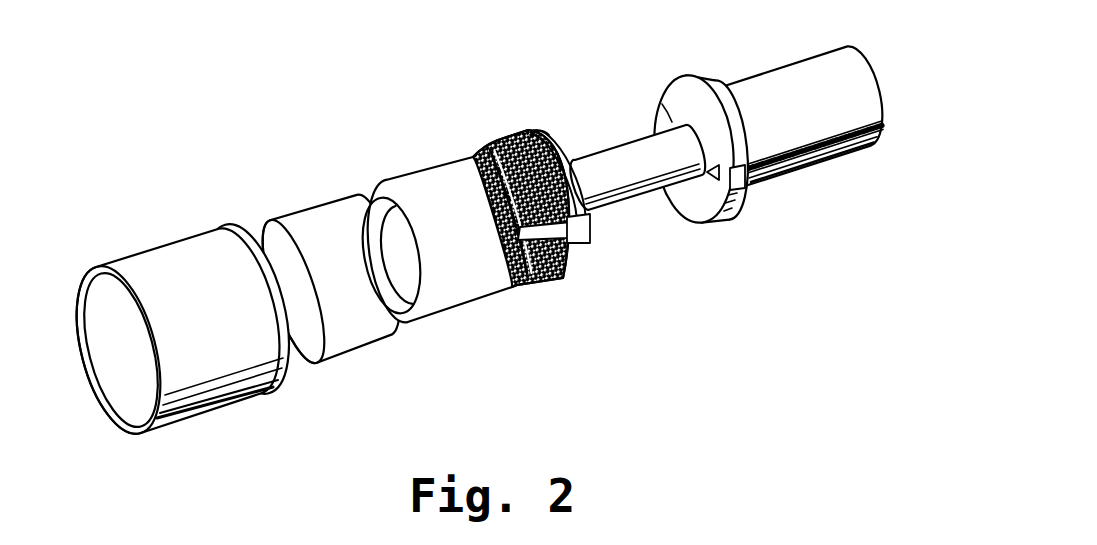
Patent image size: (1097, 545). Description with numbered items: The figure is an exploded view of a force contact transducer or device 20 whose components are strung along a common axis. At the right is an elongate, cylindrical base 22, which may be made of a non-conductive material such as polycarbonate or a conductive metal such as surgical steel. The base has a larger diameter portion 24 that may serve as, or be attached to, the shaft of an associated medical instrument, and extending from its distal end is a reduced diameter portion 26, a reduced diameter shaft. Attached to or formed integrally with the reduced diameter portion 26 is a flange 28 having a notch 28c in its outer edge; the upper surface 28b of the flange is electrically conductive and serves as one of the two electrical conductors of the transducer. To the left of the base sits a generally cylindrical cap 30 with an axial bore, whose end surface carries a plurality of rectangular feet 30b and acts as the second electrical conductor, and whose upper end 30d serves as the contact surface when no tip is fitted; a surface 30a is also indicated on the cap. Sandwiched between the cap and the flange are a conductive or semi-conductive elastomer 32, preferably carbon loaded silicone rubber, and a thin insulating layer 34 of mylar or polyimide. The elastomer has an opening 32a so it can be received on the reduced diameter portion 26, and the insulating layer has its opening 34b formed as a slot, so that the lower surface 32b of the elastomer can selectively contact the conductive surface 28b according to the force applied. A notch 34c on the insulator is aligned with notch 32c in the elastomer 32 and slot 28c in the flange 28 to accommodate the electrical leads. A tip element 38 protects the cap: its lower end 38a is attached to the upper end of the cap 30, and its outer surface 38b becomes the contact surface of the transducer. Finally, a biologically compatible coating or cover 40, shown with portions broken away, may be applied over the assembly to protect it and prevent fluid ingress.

The force contact transducer 20 is at (355, 355).
The base 22 is at (665, 200).
The larger diameter portion 24 is at (780, 73).
The reduced diameter portion 26 is at (637, 208).
The flange 28 is at (688, 82).
The upper surface of the flange 28b is at (663, 103).
The notch 28c is at (753, 183).
The cap 30 is at (432, 175).
The sleeve lower rim 30a is at (512, 290).
The rectangular feet 30b is at (473, 153).
The upper end of the cap 30d is at (382, 195).
The conductive elastomer 32 is at (553, 273).
The opening 32a is at (478, 150).
The lower surface of the conductive elastomer 32b is at (560, 270).
The notch 32c is at (530, 280).
The insulating layer 34 is at (553, 150).
The opening 34b is at (557, 150).
The notch 34c is at (590, 222).
The tip element 38 is at (180, 253).
The lower end of the tip 38a is at (243, 232).
The outer surface of the tip 38b is at (100, 270).
The coating or cover 40 is at (322, 202).